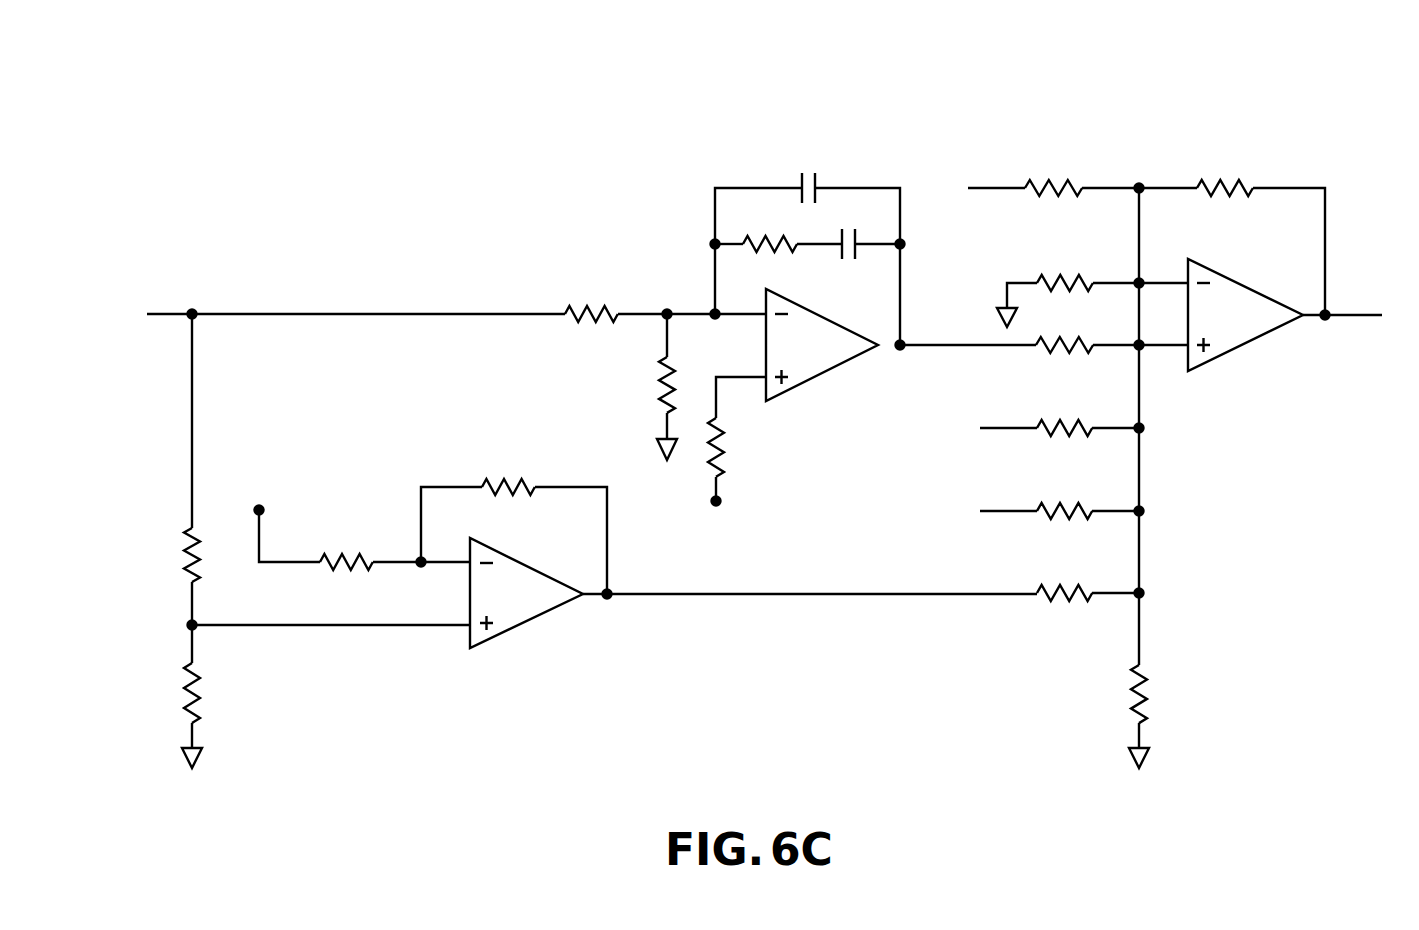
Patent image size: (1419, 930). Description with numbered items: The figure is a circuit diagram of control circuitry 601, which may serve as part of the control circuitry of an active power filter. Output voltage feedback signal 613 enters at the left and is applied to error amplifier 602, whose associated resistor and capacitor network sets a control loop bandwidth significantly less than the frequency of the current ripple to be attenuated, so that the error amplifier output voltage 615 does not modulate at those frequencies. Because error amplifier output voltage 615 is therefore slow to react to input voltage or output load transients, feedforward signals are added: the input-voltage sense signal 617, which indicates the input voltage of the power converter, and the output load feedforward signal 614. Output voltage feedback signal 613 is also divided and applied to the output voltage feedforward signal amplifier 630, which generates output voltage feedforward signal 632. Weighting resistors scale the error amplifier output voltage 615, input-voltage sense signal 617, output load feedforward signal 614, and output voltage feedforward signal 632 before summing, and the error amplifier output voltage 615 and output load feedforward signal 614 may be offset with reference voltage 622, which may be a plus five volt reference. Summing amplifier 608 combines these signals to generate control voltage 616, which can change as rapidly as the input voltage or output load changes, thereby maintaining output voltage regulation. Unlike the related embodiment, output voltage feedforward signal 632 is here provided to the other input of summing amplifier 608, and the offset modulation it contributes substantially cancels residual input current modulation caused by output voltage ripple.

The control circuitry 601 is at (215, 165).
The output voltage feedback signal 613 is at (165, 313).
The error amplifier 602 is at (824, 318).
The error amplifier output voltage 615 is at (963, 344).
The input-voltage sense signal 617 is at (995, 186).
The summing amplifier 608 is at (1246, 294).
The control voltage 616 is at (1358, 319).
The output load feedforward signal 614 is at (1008, 426).
The reference voltage 622 is at (1008, 509).
The output voltage feedforward signal amplifier 630 is at (529, 565).
The output voltage feedforward signal 632 is at (809, 594).